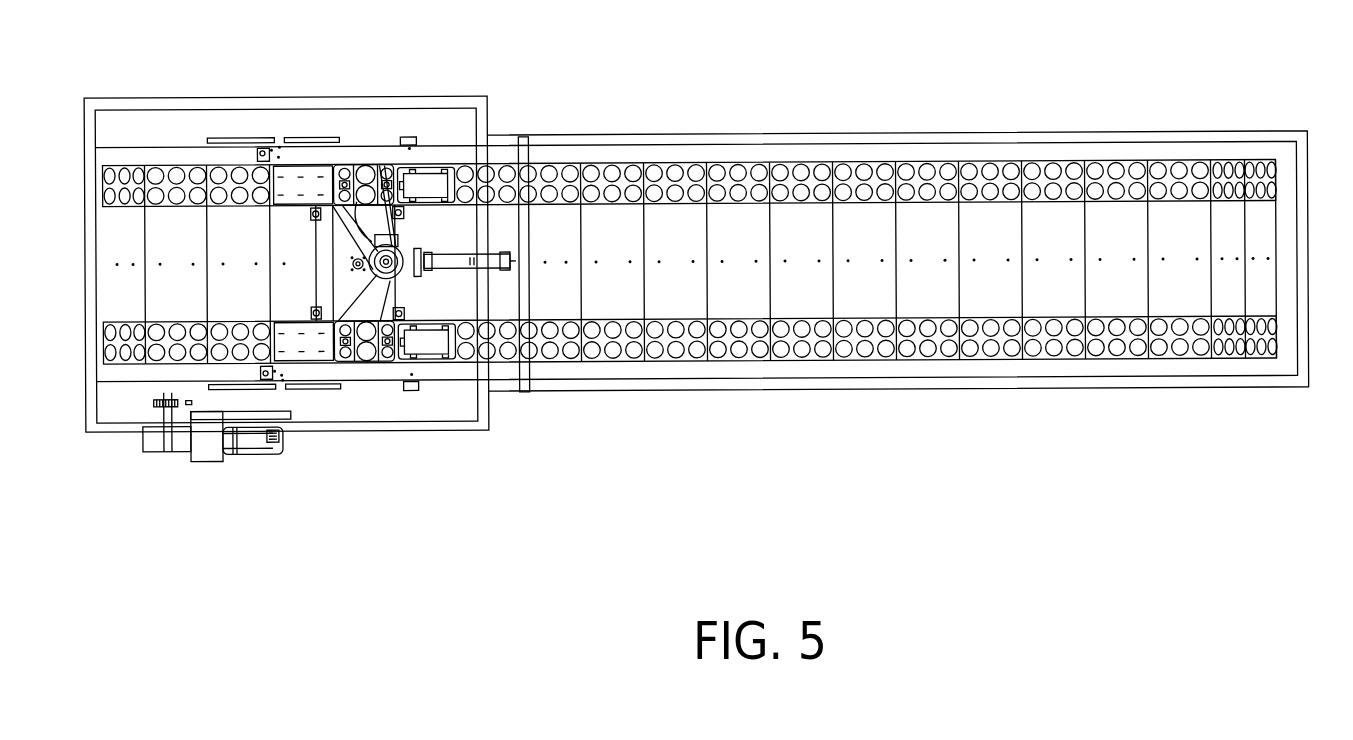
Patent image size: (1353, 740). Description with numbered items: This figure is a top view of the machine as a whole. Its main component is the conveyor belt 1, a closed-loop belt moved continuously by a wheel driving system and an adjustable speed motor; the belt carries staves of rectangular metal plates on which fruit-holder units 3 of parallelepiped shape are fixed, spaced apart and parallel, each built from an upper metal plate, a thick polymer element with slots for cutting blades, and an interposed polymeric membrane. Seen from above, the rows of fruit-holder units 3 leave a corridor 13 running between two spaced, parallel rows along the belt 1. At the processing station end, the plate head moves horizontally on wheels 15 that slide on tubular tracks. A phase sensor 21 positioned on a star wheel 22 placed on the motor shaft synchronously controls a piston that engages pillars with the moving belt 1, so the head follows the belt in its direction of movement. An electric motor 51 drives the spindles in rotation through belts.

The conveyor belt 1 is at (1075, 360).
The fruit-holder unit 3 is at (1195, 355).
The corridor 13 is at (1258, 288).
The wheels 15 is at (410, 388).
The phase sensor 21 is at (187, 407).
The star wheel 22 is at (150, 400).
The electric motor 51 is at (378, 181).